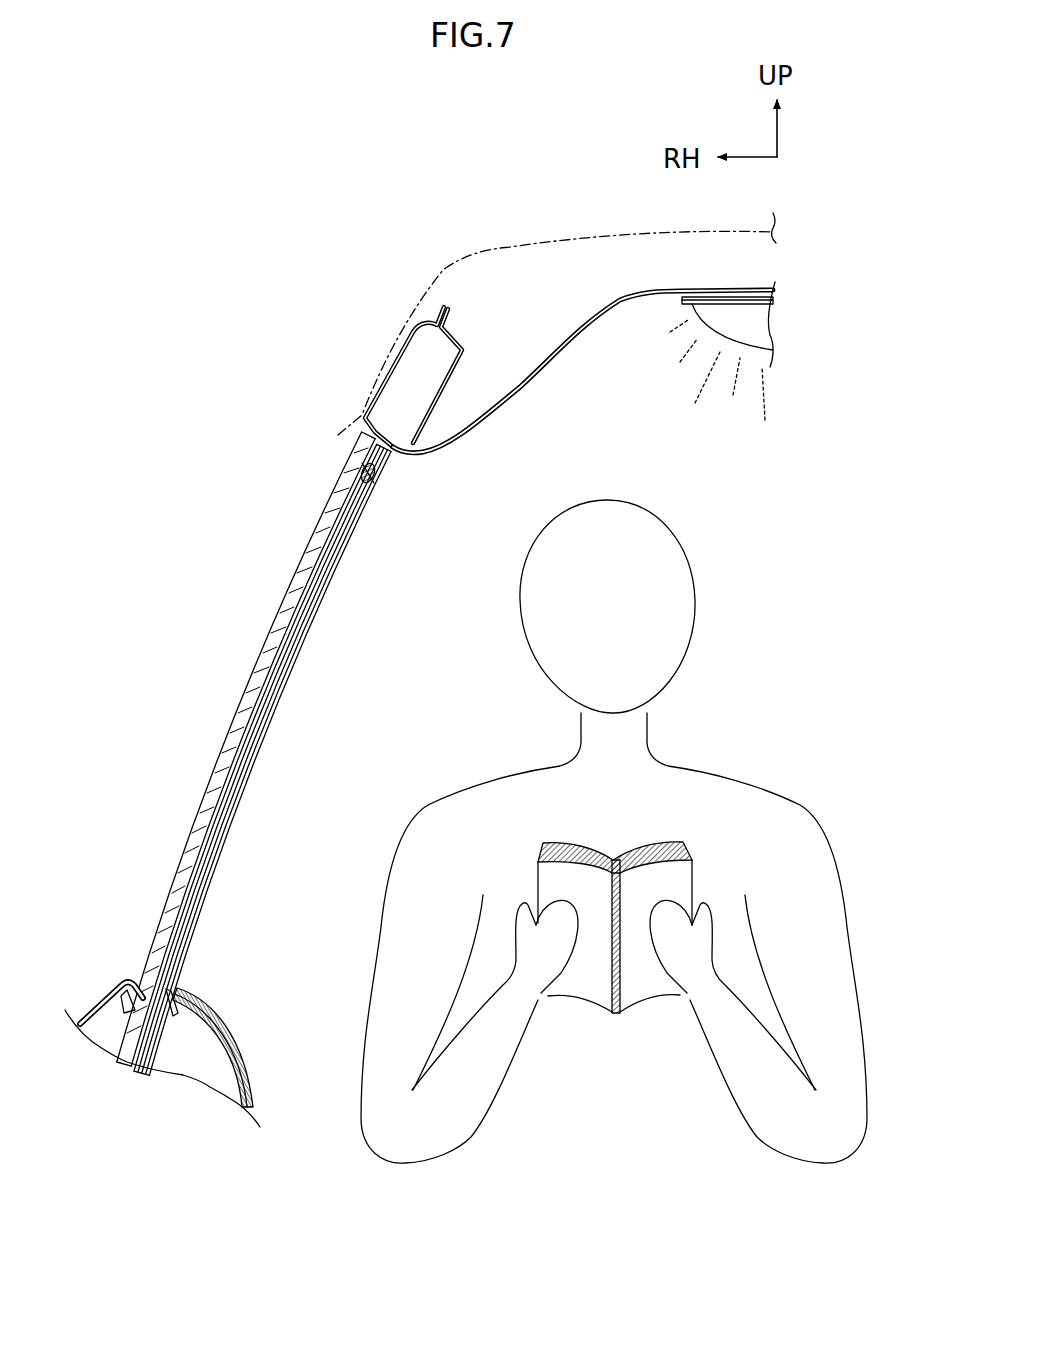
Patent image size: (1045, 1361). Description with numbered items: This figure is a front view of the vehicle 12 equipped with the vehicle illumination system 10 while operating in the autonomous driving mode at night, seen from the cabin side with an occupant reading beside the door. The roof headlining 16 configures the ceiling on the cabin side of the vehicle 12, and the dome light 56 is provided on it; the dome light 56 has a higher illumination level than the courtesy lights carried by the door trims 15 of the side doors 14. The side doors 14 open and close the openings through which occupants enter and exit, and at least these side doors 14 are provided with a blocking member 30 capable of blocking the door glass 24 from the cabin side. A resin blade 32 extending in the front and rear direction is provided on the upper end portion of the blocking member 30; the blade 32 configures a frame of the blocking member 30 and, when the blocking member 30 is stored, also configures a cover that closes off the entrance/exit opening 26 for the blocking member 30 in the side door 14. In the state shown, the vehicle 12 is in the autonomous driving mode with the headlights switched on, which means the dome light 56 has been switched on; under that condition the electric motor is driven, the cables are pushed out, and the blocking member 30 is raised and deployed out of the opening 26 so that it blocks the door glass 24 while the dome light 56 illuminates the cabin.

The vehicle illumination system 10 is at (745, 430).
The vehicle 12 is at (449, 222).
The side doors 14 is at (99, 987).
The door trims 15 is at (248, 1045).
The roof headlining 16 is at (637, 305).
The door glasses 24 is at (270, 640).
The entrance/exit opening 26 is at (176, 988).
The blocking member 30 is at (298, 633).
The blade 32 is at (378, 482).
The dome light 56 is at (777, 330).